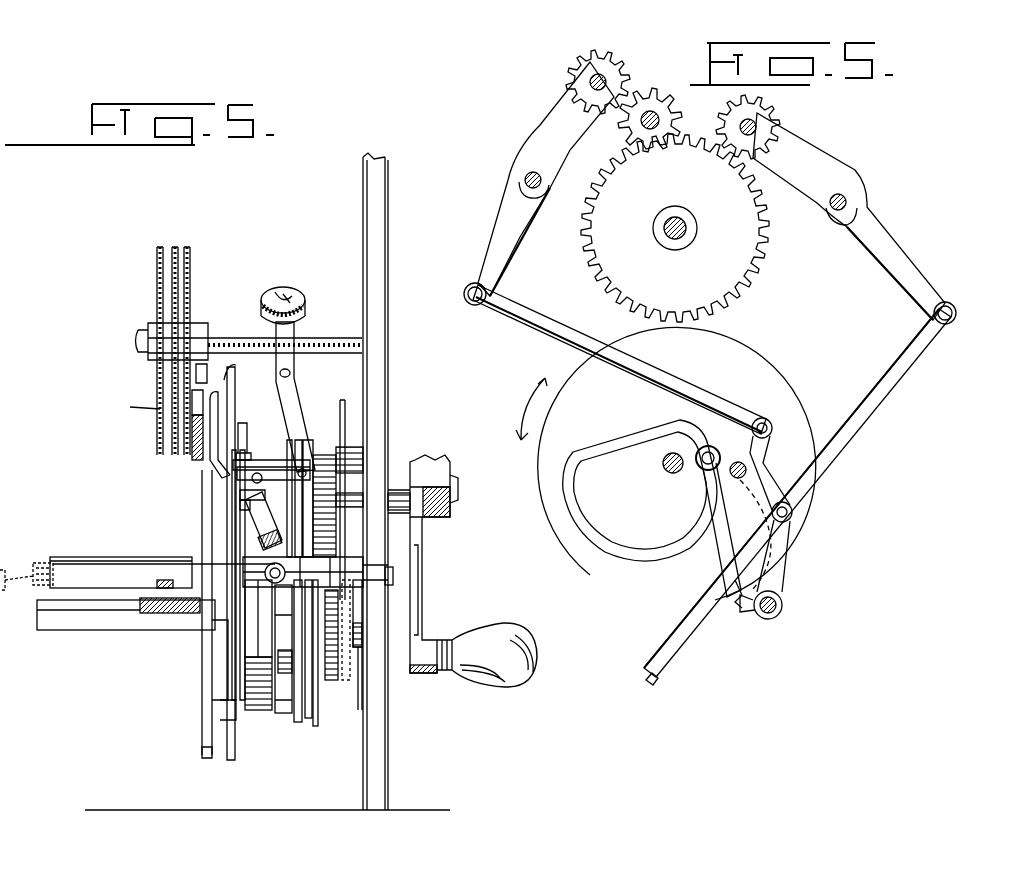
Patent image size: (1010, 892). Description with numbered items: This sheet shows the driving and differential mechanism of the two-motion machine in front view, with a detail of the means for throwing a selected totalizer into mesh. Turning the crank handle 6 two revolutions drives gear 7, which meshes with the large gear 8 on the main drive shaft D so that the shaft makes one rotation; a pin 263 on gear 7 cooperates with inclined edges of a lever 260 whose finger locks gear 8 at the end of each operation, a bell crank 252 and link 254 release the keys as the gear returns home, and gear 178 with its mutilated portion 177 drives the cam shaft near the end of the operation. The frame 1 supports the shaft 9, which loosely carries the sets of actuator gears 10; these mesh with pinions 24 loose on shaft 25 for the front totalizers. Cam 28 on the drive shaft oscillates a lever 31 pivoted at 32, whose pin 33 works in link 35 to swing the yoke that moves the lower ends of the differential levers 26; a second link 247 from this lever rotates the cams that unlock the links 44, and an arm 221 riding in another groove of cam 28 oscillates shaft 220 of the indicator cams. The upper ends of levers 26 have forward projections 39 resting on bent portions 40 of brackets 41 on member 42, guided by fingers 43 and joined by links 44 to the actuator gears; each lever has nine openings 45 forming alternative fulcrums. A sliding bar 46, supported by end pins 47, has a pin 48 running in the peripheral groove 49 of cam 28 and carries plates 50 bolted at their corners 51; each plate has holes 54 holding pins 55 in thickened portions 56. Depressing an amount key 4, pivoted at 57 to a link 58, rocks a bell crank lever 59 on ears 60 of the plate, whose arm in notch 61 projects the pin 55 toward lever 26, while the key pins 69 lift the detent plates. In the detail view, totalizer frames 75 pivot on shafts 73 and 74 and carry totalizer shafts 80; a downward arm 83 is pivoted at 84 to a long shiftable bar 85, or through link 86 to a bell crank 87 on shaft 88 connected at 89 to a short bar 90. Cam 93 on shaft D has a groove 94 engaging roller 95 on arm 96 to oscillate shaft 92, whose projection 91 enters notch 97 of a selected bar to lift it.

In FIG. 5, the frame plate 1 is at (368, 200).
In FIG. 5, the amount keys 4 is at (296, 335).
In FIG. 5, the crank handle 6 is at (423, 625).
In FIG. 5, the gear 7 is at (363, 478).
In FIG. 5, the large gear 8 is at (332, 700).
In FIG. 5, the shaft 9 is at (228, 337).
In FIG. 6, the shaft 9 is at (672, 252).
In FIG. 5, the actuator gear set 10 is at (190, 293).
In FIG. 6, the actuator gear set 10 is at (600, 278).
In FIG. 6, the pinions 24 is at (632, 127).
In FIG. 6, the shaft 25 is at (652, 129).
In FIG. 5, the differential levers 26 is at (215, 656).
In FIG. 5, the cam 28 is at (232, 710).
In FIG. 5, the lever 31 is at (305, 722).
In FIG. 5, the pivot 32 is at (352, 450).
In FIG. 5, the pin 33 is at (295, 725).
In FIG. 5, the link 35 is at (318, 728).
In FIG. 5, the forward projections 39 is at (207, 378).
In FIG. 5, the laterally bent portions 40 is at (195, 446).
In FIG. 5, the brackets 41 is at (192, 546).
In FIG. 5, the member 42 is at (95, 625).
In FIG. 5, the fingers 43 is at (216, 408).
In FIG. 5, the links 44 is at (133, 406).
In FIG. 5, the openings 45 is at (240, 495).
In FIG. 5, the longitudinally movable bar 46 is at (76, 575).
In FIG. 5, the pins 47 is at (395, 575).
In FIG. 5, the pin 48 is at (250, 572).
In FIG. 5, the peripheral cam groove 49 is at (280, 720).
In FIG. 5, the plates 50 is at (236, 392).
In FIG. 5, the lower rear corners 51 is at (265, 540).
In FIG. 5, the holes 54 is at (240, 505).
In FIG. 5, the pins 55 is at (232, 470).
In FIG. 5, the thickened portions 56 is at (305, 432).
In FIG. 5, the pivotal connection 57 is at (292, 373).
In FIG. 5, the links 58 is at (326, 455).
In FIG. 5, the bell crank lever 59 is at (265, 460).
In FIG. 5, the ears 60 is at (248, 430).
In FIG. 5, the lateral notch 61 is at (345, 530).
In FIG. 5, the pins 69 is at (292, 292).
In FIG. 6, the shaft 73 is at (524, 180).
In FIG. 6, the shaft 74 is at (835, 212).
In FIG. 6, the totalizer frames 75 is at (536, 131).
In FIG. 6, the totalizer shaft 80 is at (612, 75).
In FIG. 6, the downward extension 83 is at (500, 235).
In FIG. 6, the pivotal connection 84 is at (470, 306).
In FIG. 6, the long shiftable bars 85 is at (890, 405).
In FIG. 6, the links 86 is at (520, 305).
In FIG. 6, the bell crank levers 87 is at (775, 438).
In FIG. 6, the shaft 88 is at (735, 470).
In FIG. 6, the connection 89 is at (793, 512).
In FIG. 6, the short shiftable bars 90 is at (668, 655).
In FIG. 6, the projections 91 is at (748, 615).
In FIG. 6, the shaft 92 is at (783, 605).
In FIG. 6, the cam 93 is at (777, 402).
In FIG. 6, the cam groove 94 is at (631, 575).
In FIG. 6, the roller 95 is at (712, 447).
In FIG. 6, the arm 96 is at (745, 542).
In FIG. 6, the notches 97 is at (735, 600).
In FIG. 5, the mutilated portion 177 is at (252, 712).
In FIG. 5, the gear 178 is at (422, 462).
In FIG. 5, the shaft 220 is at (208, 685).
In FIG. 5, the arm 221 is at (202, 640).
In FIG. 5, the link 247 is at (352, 700).
In FIG. 5, the bell crank 252 is at (362, 622).
In FIG. 5, the link 254 is at (350, 645).
In FIG. 5, the lever 260 is at (358, 660).
In FIG. 5, the pin 263 is at (462, 486).
In FIG. 6, the main drive shaft D is at (670, 473).